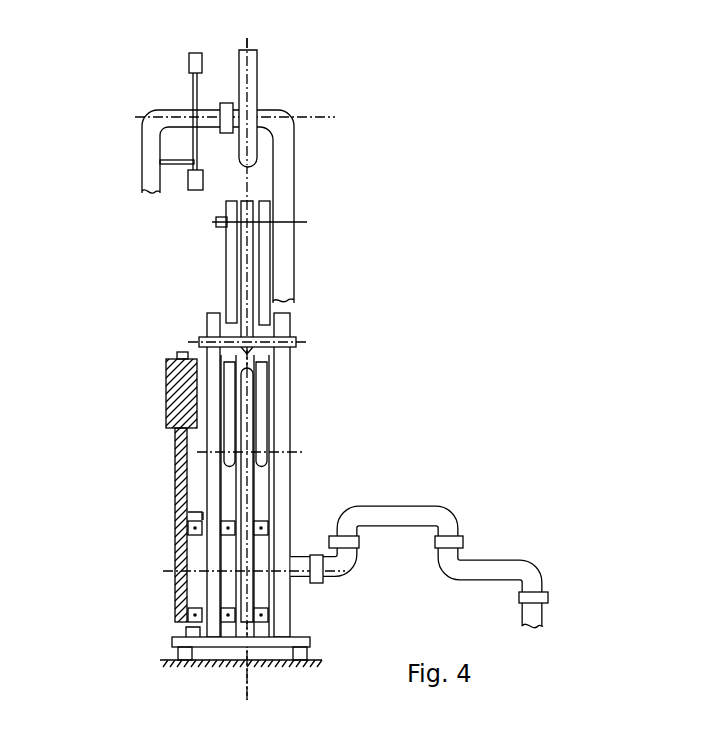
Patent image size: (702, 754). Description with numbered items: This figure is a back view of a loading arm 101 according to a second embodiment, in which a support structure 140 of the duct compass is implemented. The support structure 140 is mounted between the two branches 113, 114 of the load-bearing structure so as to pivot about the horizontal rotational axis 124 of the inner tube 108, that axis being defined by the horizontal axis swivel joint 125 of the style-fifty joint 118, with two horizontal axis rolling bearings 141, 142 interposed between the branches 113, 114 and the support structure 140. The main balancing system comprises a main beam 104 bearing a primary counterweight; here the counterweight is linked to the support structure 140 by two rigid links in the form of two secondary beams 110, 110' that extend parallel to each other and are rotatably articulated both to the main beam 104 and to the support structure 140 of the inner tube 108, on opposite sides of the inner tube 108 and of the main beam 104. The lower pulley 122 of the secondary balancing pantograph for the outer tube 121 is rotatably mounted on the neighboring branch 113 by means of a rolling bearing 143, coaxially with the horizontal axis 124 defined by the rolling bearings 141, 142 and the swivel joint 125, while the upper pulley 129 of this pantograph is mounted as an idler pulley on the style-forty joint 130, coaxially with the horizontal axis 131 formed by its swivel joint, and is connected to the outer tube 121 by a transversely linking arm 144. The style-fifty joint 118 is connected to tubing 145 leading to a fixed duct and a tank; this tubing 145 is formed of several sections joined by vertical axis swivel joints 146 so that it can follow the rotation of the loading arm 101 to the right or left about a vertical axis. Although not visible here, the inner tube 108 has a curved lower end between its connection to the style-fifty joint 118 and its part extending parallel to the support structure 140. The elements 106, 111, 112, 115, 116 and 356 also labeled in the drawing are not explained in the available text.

The loading arm 101 is at (303, 359).
The main beam 104 is at (249, 255).
The pivot pin 106 is at (300, 342).
The inner tube 108 is at (282, 192).
The secondary beam 110 is at (309, 263).
The secondary beam 110' is at (188, 262).
The flange 111 is at (219, 237).
The lower slide bars 112 is at (263, 447).
The branch of the load-bearing structure 113 is at (210, 630).
The branch of the load-bearing structure 114 is at (291, 612).
The frame 115 is at (156, 648).
The ground 116 is at (170, 650).
The style "50" 118 is at (301, 543).
The outer tube 121 is at (147, 182).
The lower pulley 122 is at (200, 512).
The horizontal rotational axis 124 is at (167, 583).
The horizontal axis swivel joint 125 is at (316, 582).
The upper pulley 129 is at (186, 89).
The style "40" 130 is at (225, 89).
The horizontal axis 131 is at (322, 118).
The support structure 140 is at (257, 80).
The horizontal axis rolling bearing 141 is at (227, 632).
The horizontal axis rolling bearing 142 is at (262, 640).
The rolling bearing 143 is at (187, 540).
The transversely linking arm 144 is at (163, 153).
The tubing 145 is at (459, 503).
The vertical axis swivel joint 146 is at (355, 548).
The hatched block 356 is at (172, 362).